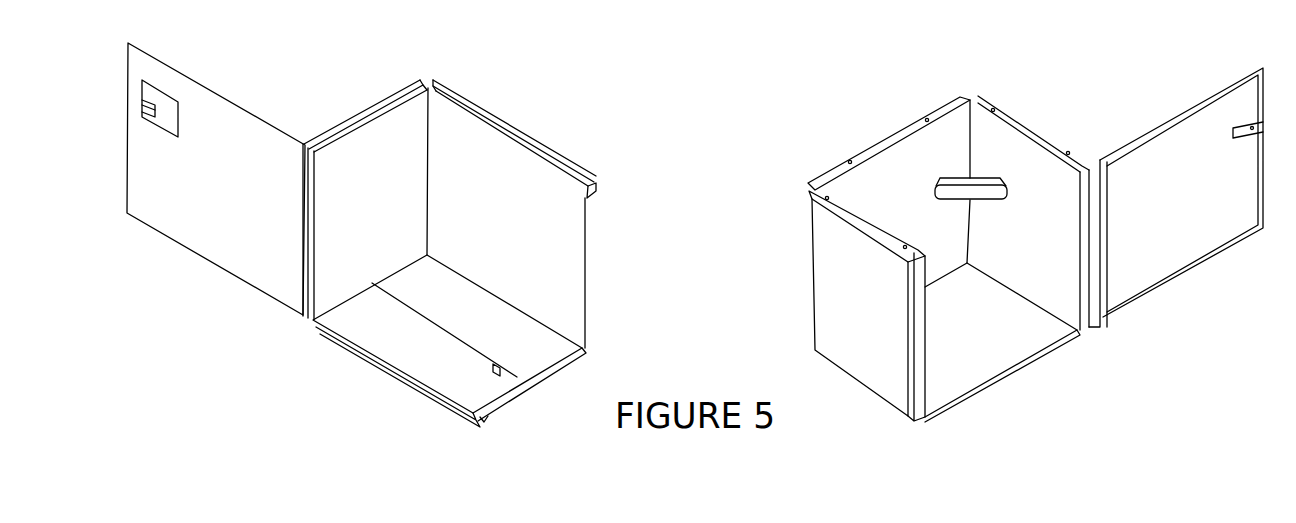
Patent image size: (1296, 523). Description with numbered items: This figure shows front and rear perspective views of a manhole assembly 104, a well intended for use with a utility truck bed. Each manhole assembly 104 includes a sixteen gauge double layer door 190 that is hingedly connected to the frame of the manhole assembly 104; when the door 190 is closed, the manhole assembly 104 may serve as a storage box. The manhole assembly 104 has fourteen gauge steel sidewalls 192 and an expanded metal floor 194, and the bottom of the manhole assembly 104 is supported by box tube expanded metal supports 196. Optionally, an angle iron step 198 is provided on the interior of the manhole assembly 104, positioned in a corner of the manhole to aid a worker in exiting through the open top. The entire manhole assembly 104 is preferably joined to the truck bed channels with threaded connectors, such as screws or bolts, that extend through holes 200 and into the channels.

The manhole assembly 104 is at (517, 107).
The door 190 is at (257, 240).
The sidewalls 192 is at (548, 262).
The expanded metal floor 194 is at (397, 337).
The box tube expanded metal supports 196 is at (498, 378).
The angle iron step 198 is at (973, 197).
The holes 200 is at (827, 198).